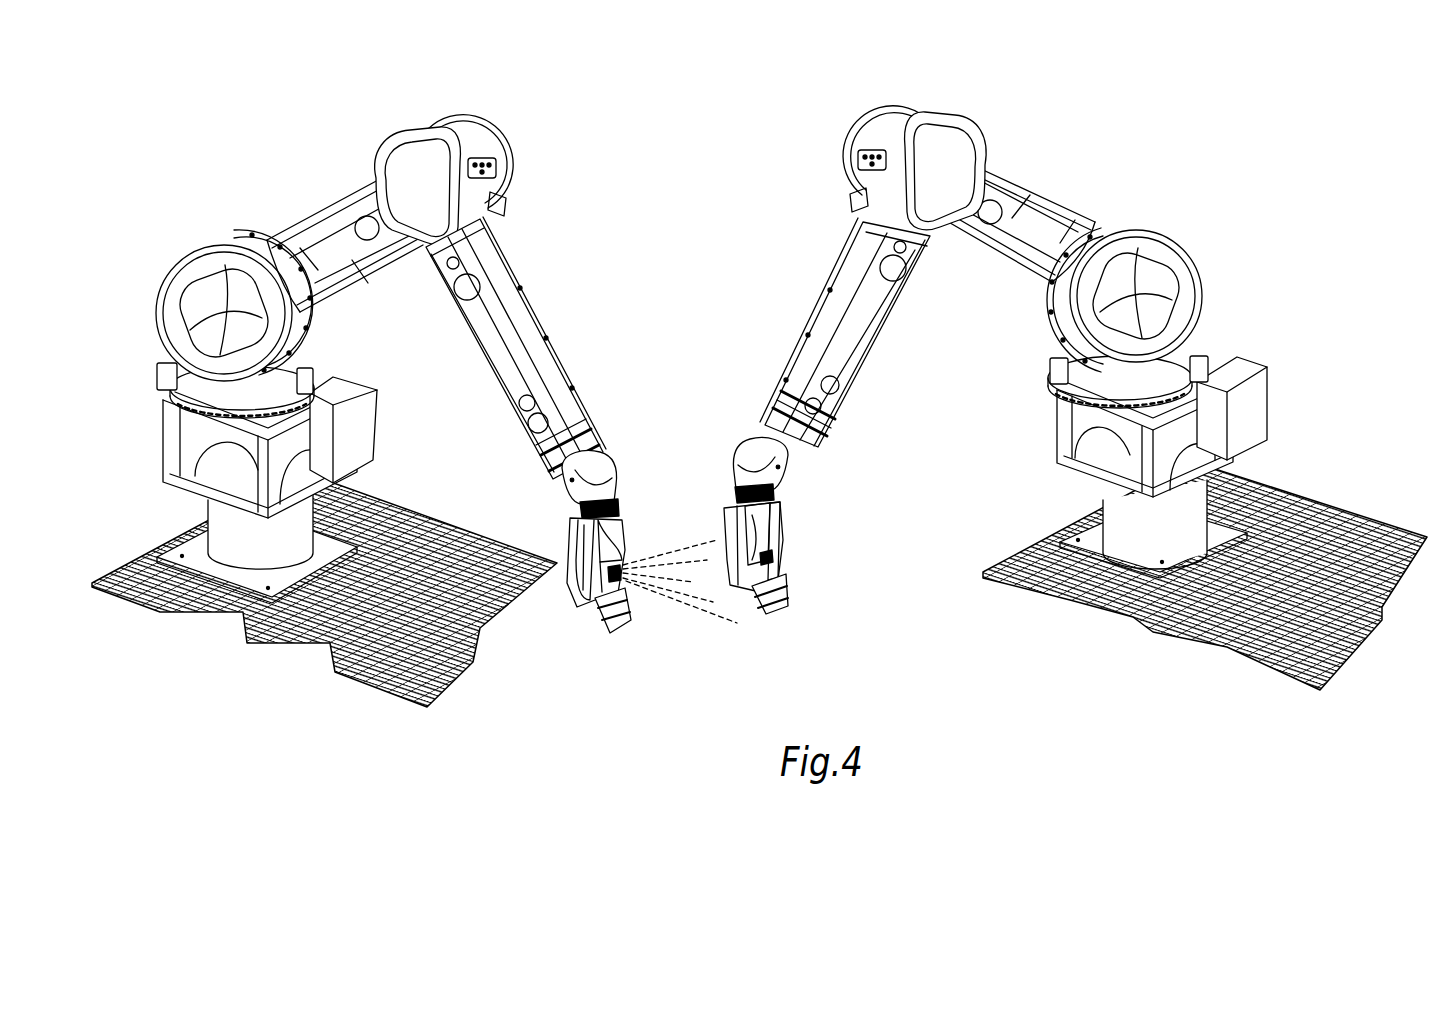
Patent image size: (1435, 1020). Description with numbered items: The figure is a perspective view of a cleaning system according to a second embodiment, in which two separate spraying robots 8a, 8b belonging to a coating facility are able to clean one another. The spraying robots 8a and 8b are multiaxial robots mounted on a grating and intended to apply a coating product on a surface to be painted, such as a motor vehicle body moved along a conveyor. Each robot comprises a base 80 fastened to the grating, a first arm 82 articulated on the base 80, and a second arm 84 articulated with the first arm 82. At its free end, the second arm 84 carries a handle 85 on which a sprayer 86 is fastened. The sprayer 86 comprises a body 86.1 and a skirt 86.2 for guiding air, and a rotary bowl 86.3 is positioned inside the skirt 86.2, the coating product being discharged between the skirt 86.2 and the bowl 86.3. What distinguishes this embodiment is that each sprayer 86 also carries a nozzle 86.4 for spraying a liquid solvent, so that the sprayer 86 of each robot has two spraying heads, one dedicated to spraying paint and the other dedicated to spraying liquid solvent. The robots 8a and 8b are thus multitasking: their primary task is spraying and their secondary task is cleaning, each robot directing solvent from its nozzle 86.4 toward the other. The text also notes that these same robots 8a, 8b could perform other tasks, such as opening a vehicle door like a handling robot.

The spraying robot 8a is at (224, 172).
The spraying robot 8b is at (1216, 172).
The base 80 is at (155, 431).
The first arm 82 is at (1010, 227).
The second arm 84 is at (508, 310).
The handle 85 is at (603, 477).
The sprayer 86 is at (627, 792).
The body 86.1 is at (577, 582).
The skirt 86.2 is at (598, 608).
The rotary bowl 86.3 is at (620, 625).
The nozzle 86.4 is at (623, 583).